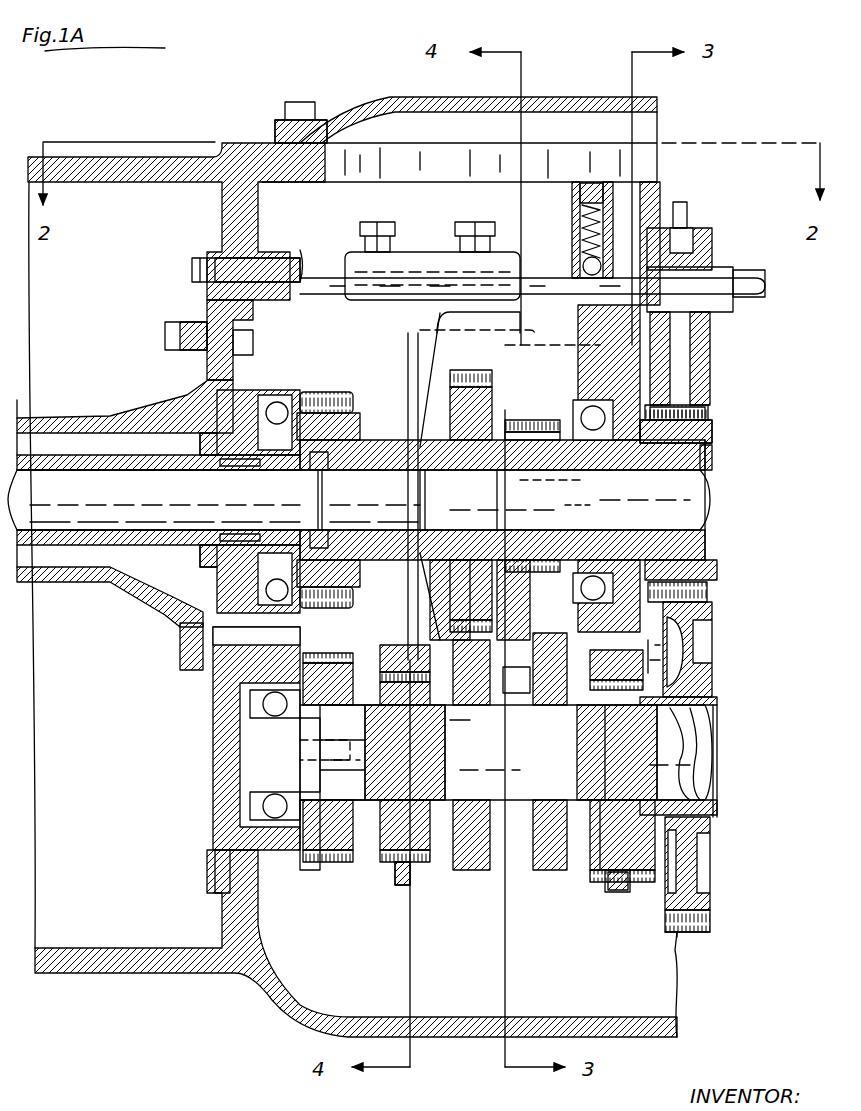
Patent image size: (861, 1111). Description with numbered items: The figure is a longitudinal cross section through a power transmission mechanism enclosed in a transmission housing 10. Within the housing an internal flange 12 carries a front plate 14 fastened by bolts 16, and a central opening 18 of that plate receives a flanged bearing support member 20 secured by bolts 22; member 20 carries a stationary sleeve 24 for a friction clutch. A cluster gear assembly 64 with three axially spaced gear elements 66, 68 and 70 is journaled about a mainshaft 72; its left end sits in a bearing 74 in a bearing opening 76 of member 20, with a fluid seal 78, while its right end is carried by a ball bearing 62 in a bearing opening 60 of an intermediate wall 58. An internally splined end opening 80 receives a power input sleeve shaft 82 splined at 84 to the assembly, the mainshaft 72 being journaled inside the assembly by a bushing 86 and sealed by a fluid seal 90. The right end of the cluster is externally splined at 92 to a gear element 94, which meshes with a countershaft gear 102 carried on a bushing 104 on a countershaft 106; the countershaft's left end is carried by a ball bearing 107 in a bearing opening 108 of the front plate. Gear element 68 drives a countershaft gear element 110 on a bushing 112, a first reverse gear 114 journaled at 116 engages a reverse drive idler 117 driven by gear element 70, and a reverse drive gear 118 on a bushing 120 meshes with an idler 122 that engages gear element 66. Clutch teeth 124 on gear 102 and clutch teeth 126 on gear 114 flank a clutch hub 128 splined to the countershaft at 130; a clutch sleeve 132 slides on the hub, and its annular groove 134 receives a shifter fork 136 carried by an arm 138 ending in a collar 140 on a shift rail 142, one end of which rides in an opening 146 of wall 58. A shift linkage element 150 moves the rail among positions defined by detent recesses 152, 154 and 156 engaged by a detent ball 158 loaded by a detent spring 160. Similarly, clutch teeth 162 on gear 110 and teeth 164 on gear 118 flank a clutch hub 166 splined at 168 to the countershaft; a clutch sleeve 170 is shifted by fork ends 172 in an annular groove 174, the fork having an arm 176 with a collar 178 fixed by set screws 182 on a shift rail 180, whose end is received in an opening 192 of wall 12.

The transmission housing 10 is at (238, 986).
The internal flange 12 is at (220, 873).
The front plate 14 is at (222, 760).
The bolts 16 is at (195, 276).
The central opening 18 is at (180, 628).
The bearing support member 20 is at (172, 605).
The bolts 22 is at (172, 345).
The stationary sleeve 24 is at (38, 416).
The wall 58 is at (582, 372).
The bearing opening 60 is at (584, 412).
The ball bearing 62 is at (595, 420).
The cluster gear assembly 64 is at (448, 568).
The gear element 66 is at (330, 392).
The gear element 68 is at (472, 392).
The gear element 70 is at (520, 420).
The mainshaft 72 is at (43, 548).
The bearing 74 is at (282, 395).
The bearing opening 76 is at (272, 396).
The fluid seal 78 is at (202, 438).
The internally splined end opening 80 is at (420, 414).
The power input sleeve shaft 82 is at (233, 470).
The spline 84 is at (280, 470).
The bushing 86 is at (412, 478).
The fluid seal 90 is at (335, 470).
The external spline 92 is at (718, 455).
The gear element 94 is at (716, 428).
The countershaft gear 102 is at (700, 650).
The bushing 104 is at (700, 715).
The countershaft 106 is at (712, 735).
The ball bearing 107 is at (264, 708).
The bearing opening 108 is at (262, 700).
The countershaft gear element 110 is at (495, 875).
The bushing 112 is at (444, 712).
The first reverse gear 114 is at (560, 870).
The journal 116 is at (565, 805).
The reverse drive idler 117 is at (597, 503).
The reverse drive gear 118 is at (305, 855).
The bushing 120 is at (298, 740).
The reverse drive idler 122 is at (298, 642).
The external clutch teeth 124 is at (655, 675).
The clutch teeth 126 is at (595, 872).
The clutch hub 128 is at (580, 727).
The splined connection 130 is at (590, 740).
The clutch sleeve 132 is at (698, 853).
The annular groove 134 is at (616, 892).
The shifter fork 136 is at (625, 876).
The arm 138 is at (705, 325).
The collar 140 is at (718, 252).
The shift rail 142 is at (747, 270).
The opening 146 is at (515, 327).
The shift linkage element 150 is at (690, 205).
The detent recess 152 is at (690, 289).
The detent recess 154 is at (540, 290).
The detent recess 156 is at (583, 268).
The detent ball 158 is at (582, 240).
The detent spring 160 is at (580, 200).
The external clutch teeth 162 is at (462, 870).
The external clutch teeth 164 is at (345, 855).
The clutch hub 166 is at (426, 752).
The spline 168 is at (400, 790).
The clutch sleeve 170 is at (392, 875).
The shifter fork ends 172 is at (393, 650).
The annular groove 174 is at (402, 865).
The arm 176 is at (428, 325).
The collar 178 is at (458, 262).
The shift rail 180 is at (332, 268).
The set screws 182 is at (488, 233).
The opening 192 is at (303, 268).